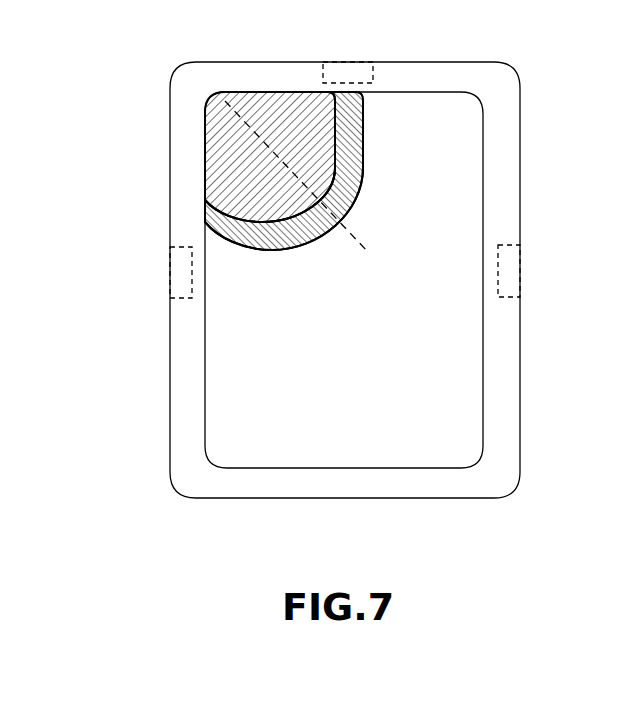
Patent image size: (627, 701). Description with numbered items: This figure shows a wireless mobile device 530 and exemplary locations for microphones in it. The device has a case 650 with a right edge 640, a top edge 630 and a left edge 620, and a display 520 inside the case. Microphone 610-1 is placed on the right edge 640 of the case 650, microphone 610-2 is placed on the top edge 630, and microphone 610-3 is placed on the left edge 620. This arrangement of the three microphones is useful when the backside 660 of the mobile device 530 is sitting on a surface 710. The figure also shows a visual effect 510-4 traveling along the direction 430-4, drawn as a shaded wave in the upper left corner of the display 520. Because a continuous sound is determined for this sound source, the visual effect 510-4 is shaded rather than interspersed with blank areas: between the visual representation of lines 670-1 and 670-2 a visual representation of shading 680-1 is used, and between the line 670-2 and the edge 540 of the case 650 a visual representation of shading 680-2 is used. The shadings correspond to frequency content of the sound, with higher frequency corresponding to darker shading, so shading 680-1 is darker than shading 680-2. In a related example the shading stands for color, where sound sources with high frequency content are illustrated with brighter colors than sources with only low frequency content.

The surface 710 is at (363, 563).
The backside 660 is at (542, 443).
The top edge 630 is at (462, 62).
The right edge 640 is at (520, 137).
The mobile device 530 is at (438, 498).
The left edge 620 is at (170, 167).
The display 520 is at (473, 217).
The edge of the case 540 is at (348, 468).
The case 650 is at (508, 400).
The microphone 610-1 is at (512, 272).
The microphone 610-2 is at (330, 70).
The microphone 610-3 is at (178, 272).
The visual effect 510-4 is at (264, 157).
The shading 680-1 is at (356, 150).
The shading 680-2 is at (317, 100).
The line 670-1 is at (300, 250).
The line 670-2 is at (333, 185).
The direction 430-4 is at (245, 122).